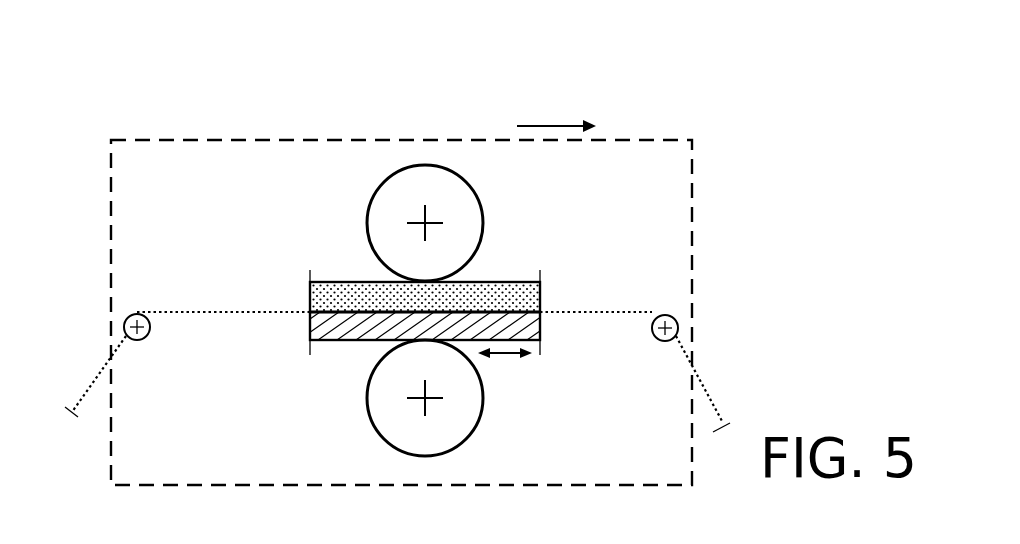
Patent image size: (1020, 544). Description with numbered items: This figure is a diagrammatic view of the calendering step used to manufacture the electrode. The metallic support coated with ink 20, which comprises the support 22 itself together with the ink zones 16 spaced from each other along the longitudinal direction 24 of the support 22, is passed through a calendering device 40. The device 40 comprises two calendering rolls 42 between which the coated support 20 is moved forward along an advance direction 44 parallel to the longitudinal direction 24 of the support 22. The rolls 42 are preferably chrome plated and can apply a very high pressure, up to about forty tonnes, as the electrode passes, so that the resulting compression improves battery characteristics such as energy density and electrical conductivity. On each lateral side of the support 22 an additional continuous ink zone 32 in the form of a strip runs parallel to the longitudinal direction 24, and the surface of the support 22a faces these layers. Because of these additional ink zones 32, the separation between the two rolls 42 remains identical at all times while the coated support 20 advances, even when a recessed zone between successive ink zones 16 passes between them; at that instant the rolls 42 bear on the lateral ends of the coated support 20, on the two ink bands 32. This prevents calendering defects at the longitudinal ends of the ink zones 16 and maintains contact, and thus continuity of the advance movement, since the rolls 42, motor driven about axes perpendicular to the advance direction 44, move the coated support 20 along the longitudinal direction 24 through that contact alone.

The ink zones 16 is at (366, 310).
The metallic support coated with ink 20 is at (397, 351).
The support 22 is at (350, 328).
The surface of carrier layer 22a is at (332, 313).
The longitudinal direction 24 is at (502, 357).
The additional continuous ink zone 32 is at (326, 287).
The calendering device 40 is at (268, 134).
The calendering rolls 42 is at (422, 185).
The advance direction 44 is at (553, 126).